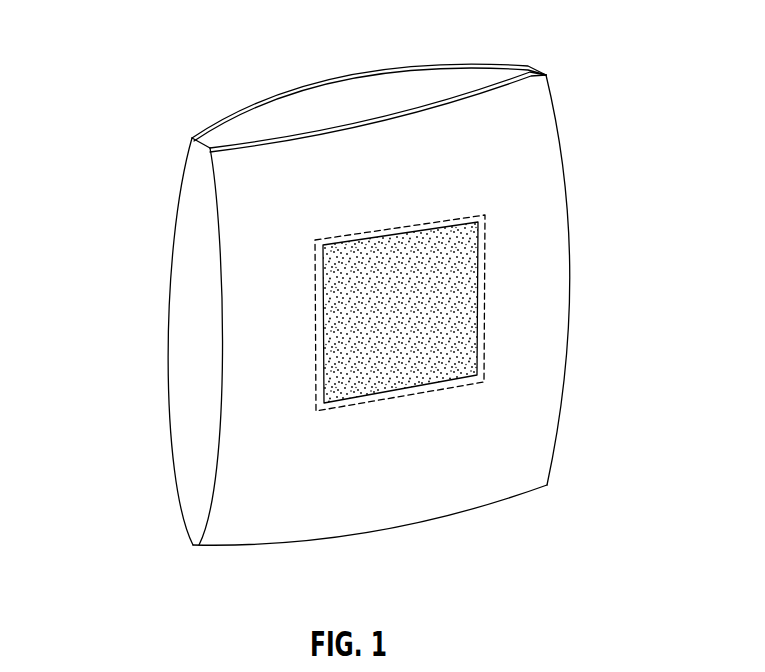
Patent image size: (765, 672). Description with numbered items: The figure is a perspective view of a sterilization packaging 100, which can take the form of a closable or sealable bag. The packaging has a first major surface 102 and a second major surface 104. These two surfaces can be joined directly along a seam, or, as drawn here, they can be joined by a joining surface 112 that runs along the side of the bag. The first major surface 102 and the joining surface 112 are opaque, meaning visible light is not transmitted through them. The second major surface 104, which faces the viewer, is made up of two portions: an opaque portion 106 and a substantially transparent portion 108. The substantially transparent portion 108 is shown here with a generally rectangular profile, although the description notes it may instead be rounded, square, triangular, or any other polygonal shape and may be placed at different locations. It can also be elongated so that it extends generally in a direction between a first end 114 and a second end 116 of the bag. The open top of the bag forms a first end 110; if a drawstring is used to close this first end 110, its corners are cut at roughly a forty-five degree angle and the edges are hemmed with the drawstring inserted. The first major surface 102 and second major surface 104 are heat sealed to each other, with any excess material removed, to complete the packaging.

The sterilization packaging 100 is at (155, 197).
The first major surface 102 is at (562, 150).
The second major surface 104 is at (257, 315).
The opaque portion 106 is at (545, 402).
The substantially transparent portion 108 is at (435, 307).
The first end 110 is at (370, 87).
The joining surface 112 is at (185, 363).
The first end 114 is at (333, 123).
The second end 116 is at (393, 532).